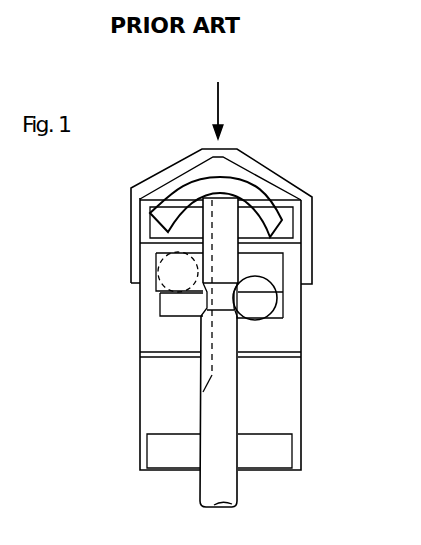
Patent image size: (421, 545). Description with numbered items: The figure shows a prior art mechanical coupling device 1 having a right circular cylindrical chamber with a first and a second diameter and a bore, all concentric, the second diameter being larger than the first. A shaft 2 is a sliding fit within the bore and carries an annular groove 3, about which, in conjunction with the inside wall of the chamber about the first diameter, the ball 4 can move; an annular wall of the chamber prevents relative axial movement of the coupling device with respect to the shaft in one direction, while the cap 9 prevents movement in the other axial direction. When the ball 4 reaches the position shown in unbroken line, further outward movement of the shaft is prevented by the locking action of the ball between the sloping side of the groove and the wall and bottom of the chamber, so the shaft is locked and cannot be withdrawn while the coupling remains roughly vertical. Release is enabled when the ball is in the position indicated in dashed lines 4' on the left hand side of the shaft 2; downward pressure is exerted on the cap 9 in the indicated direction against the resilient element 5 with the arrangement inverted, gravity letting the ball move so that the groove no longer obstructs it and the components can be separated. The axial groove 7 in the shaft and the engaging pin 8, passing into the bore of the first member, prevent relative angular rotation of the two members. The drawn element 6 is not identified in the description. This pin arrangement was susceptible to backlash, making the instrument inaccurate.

The coupling device 1 is at (138, 325).
The shaft 2 is at (237, 487).
The annular groove 3 is at (217, 301).
The ball 4 is at (296, 307).
The ball in dashed-line position 4' is at (178, 184).
The resilient element 5 is at (280, 225).
The spring bracket 6 is at (263, 258).
The axial groove 7 is at (210, 377).
The engaging pin 8 is at (140, 352).
The cap 9 is at (237, 150).